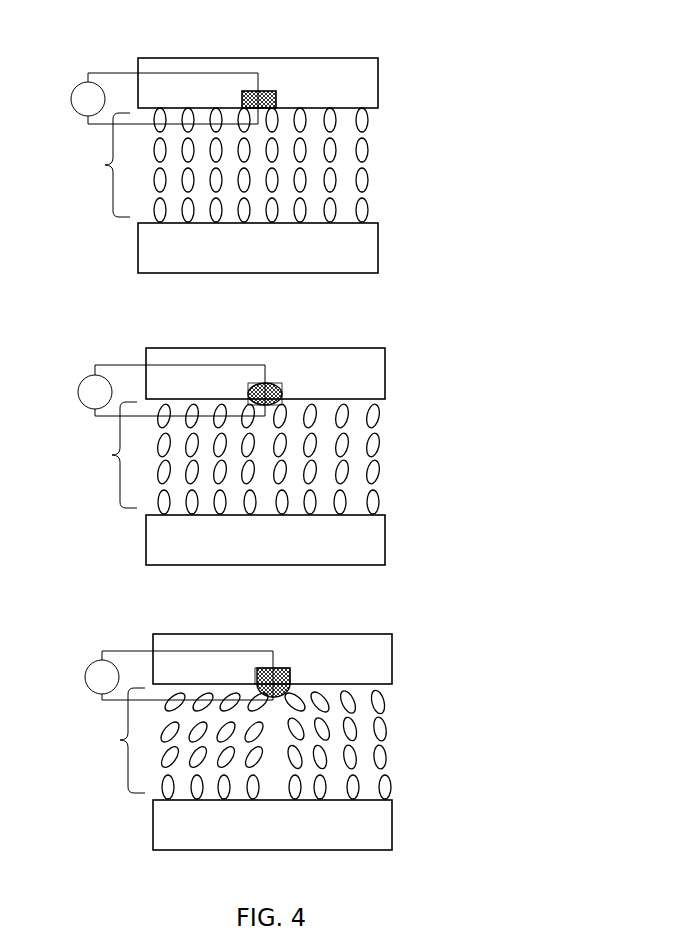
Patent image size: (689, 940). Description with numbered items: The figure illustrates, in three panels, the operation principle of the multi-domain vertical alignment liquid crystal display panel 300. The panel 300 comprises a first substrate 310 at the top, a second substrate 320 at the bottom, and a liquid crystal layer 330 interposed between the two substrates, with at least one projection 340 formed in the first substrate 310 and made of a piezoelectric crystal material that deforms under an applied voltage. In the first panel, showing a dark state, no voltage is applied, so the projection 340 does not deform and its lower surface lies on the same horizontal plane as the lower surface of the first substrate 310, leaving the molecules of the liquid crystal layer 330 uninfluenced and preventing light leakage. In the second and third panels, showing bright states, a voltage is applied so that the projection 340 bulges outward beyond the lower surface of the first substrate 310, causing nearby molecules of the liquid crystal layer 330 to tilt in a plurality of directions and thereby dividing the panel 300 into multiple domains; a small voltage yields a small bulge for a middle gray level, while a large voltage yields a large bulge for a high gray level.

The multi-domain vertical alignment liquid crystal display panel 300 is at (265, 455).
The first substrate 310 is at (361, 77).
The second substrate 320 is at (361, 257).
The liquid crystal layer 330 is at (281, 626).
The projection 340 is at (276, 108).